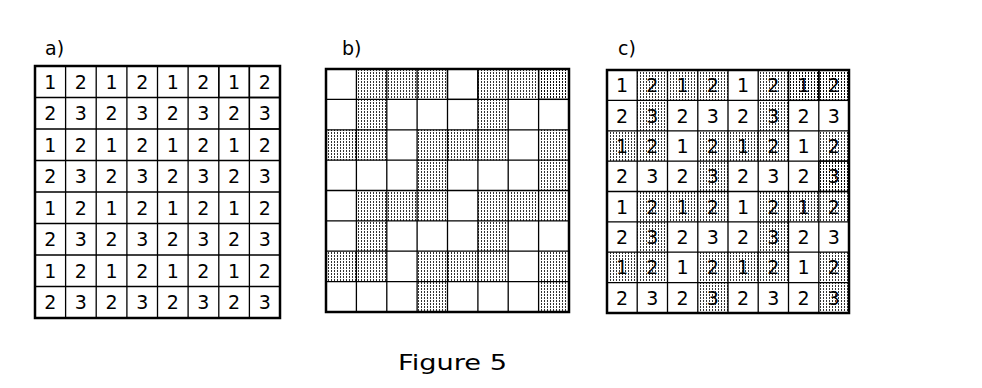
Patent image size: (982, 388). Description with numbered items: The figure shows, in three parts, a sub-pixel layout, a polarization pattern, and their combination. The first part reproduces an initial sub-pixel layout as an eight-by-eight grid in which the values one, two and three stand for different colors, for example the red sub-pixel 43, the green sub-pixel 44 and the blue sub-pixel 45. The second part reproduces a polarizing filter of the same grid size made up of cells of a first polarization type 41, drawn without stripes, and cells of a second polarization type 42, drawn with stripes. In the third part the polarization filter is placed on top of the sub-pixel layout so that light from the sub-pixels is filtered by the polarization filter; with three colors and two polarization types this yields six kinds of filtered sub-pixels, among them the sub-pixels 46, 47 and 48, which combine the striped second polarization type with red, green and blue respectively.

The first polarization type 41 is at (463, 72).
The second polarization type 42 is at (548, 72).
The red sub-pixel 43 is at (228, 70).
The green sub-pixel 44 is at (255, 70).
The blue sub-pixel 45 is at (260, 106).
The red sub-pixel with second polarization type 46 is at (803, 72).
The green sub-pixel with second polarization type 47 is at (830, 72).
The blue sub-pixel with second polarization type 48 is at (840, 167).